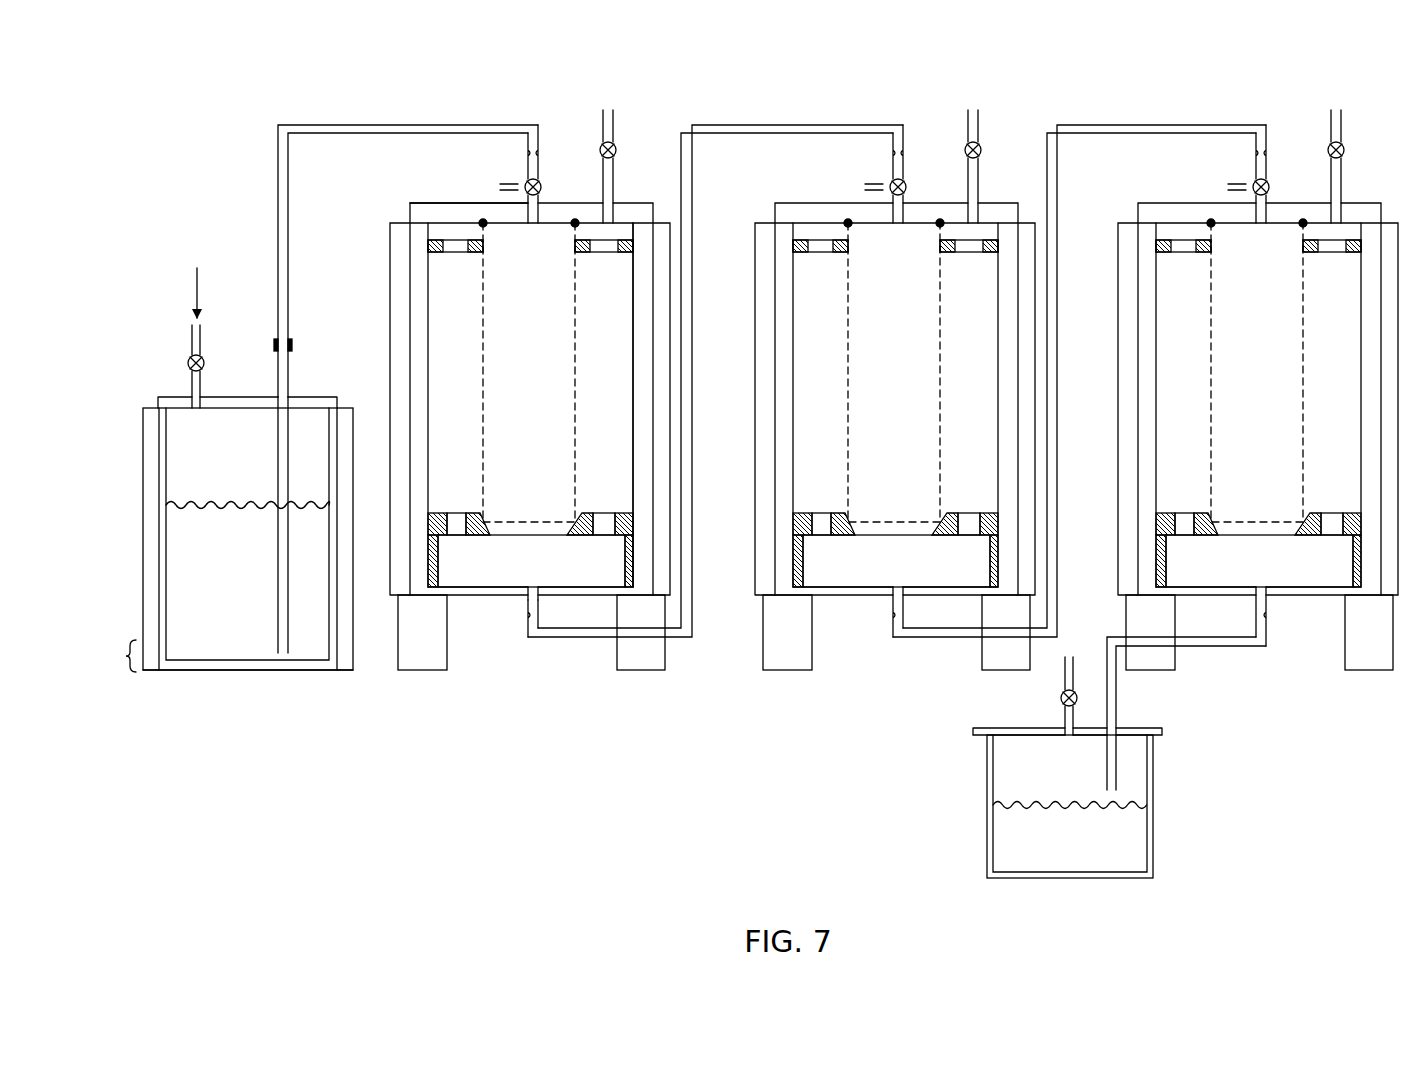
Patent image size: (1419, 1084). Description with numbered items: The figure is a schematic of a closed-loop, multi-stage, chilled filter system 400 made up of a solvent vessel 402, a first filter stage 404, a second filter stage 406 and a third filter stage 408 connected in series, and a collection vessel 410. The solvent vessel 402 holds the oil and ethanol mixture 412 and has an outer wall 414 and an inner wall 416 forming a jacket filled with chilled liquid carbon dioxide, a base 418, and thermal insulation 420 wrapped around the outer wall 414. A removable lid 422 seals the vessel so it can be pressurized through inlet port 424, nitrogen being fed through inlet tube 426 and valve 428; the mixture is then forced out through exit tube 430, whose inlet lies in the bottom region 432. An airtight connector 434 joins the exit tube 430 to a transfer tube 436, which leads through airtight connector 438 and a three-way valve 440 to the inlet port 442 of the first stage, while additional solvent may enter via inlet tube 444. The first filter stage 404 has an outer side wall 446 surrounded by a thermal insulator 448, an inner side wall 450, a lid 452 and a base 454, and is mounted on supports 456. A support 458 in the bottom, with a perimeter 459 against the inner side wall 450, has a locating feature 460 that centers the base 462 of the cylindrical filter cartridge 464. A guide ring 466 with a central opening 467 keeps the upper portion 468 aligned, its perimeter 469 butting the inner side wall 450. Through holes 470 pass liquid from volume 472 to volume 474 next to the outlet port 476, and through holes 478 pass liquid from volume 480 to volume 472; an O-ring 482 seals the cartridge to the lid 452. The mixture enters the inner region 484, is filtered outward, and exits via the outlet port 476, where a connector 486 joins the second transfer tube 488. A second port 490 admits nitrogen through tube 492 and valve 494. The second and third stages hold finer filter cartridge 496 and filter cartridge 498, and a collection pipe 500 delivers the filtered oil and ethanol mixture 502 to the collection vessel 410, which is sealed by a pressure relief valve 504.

The closed-loop, multi-stage filter system 400 is at (200, 88).
The solvent vessel 402 is at (235, 712).
The first filter stage 404 is at (492, 718).
The second filter stage 406 is at (860, 718).
The third filter stage 408 is at (1328, 712).
The collection vessel 410 is at (1157, 775).
The oil and ethanol mixture 412 is at (187, 625).
The outer wall 414 is at (160, 566).
The inner wall 416 is at (168, 450).
The base 418 is at (228, 672).
The thermal insulation 420 is at (143, 462).
The removable lid 422 is at (160, 397).
The inlet port 424 is at (204, 396).
The inlet tube 426 is at (190, 337).
The valve 428 is at (187, 360).
The exit tube 430 is at (290, 392).
The bottom region 432 is at (106, 656).
The airtight connector 434 is at (292, 343).
The transfer tube 436 is at (278, 312).
The airtight connector 438 is at (540, 158).
The 3-way valve 440 is at (525, 182).
The inlet port 442 is at (540, 200).
The inlet tube 444 is at (518, 181).
The outer side wall 446 is at (408, 278).
The thermal insulator 448 is at (390, 243).
The inner side wall 450 is at (430, 328).
The lid 452 is at (408, 202).
The base 454 is at (461, 600).
The supports 456 is at (667, 652).
The support 458 is at (452, 523).
The perimeter 459 is at (632, 548).
The locating feature 460 is at (467, 525).
The base 462 is at (533, 520).
The filter cartridge 464 is at (482, 450).
The guide ring 466 is at (445, 255).
The central opening 467 is at (483, 246).
The upper portion 468 is at (571, 268).
The perimeter 469 is at (635, 245).
The through holes 470 is at (603, 512).
The volume 472 is at (593, 393).
The volume 474 is at (579, 577).
The outlet port 476 is at (526, 604).
The through holes 478 is at (598, 255).
The volume 480 is at (620, 232).
The O-ring 482 is at (480, 220).
The inner region 484 is at (518, 363).
The connector 486 is at (527, 622).
The second transfer tube 488 is at (565, 640).
The second port 490 is at (615, 170).
The tube 492 is at (603, 120).
The valve 494 is at (600, 142).
The filter cartridge 496 is at (869, 372).
The filter cartridge 498 is at (1236, 372).
The collection pipe 500 is at (1122, 720).
The filtered oil and ethanol mixture 502 is at (1130, 848).
The pressure relief valve 504 is at (1058, 697).